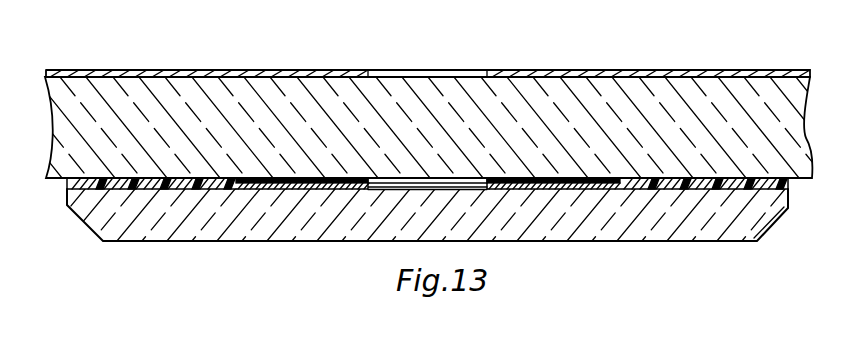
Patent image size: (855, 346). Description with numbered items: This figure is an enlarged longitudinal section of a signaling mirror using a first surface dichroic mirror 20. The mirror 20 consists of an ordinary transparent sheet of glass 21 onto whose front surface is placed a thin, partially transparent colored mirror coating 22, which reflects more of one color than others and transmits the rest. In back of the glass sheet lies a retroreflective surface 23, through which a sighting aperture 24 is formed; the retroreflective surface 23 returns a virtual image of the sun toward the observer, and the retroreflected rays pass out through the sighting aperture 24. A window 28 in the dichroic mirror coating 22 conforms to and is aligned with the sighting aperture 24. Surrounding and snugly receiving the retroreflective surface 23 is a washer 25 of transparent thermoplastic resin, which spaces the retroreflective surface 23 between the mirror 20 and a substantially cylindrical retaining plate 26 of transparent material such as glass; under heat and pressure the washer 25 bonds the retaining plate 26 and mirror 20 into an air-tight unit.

The dichroic mirror 20 is at (157, 71).
The transparent sheet of glass 21 is at (272, 84).
The colored mirror coating 22 is at (592, 76).
The window 28 is at (436, 74).
The retroreflective surface 23 is at (299, 188).
The sighting aperture 24 is at (449, 185).
The washer 25 is at (650, 186).
The retaining plate 26 is at (720, 212).